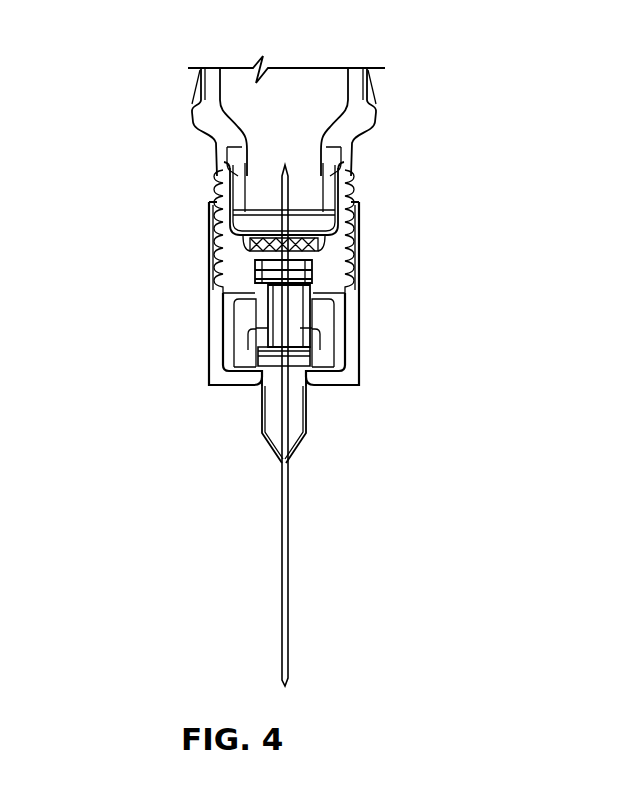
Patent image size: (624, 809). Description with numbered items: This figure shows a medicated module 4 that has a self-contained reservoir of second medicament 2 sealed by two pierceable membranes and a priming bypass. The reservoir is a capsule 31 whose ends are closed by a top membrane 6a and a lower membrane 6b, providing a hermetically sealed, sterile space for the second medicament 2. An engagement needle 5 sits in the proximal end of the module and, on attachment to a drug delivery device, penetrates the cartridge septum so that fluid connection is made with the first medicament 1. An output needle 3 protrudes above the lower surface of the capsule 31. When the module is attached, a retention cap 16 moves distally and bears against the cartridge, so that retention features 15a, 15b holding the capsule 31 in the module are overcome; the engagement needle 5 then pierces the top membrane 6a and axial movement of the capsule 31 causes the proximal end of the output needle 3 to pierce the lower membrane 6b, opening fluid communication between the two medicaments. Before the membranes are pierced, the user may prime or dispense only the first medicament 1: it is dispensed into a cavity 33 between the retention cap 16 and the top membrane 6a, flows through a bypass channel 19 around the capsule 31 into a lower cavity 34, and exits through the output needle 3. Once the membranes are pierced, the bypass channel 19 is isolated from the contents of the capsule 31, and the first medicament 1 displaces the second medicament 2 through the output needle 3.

The first medicament 1 is at (331, 86).
The second medicament 2 is at (286, 334).
The output needle 3 is at (294, 565).
The medicated module 4 is at (125, 73).
The engagement needle 5 is at (288, 192).
The top membrane 6a is at (315, 286).
The lower membrane 6b is at (312, 379).
The retention feature 15a is at (256, 272).
The retention feature 15b is at (248, 333).
The retention cap 16 is at (320, 262).
The bypass channel 19 is at (255, 372).
The capsule 31 is at (311, 304).
The cavity 33 is at (313, 282).
The lower cavity 34 is at (262, 376).